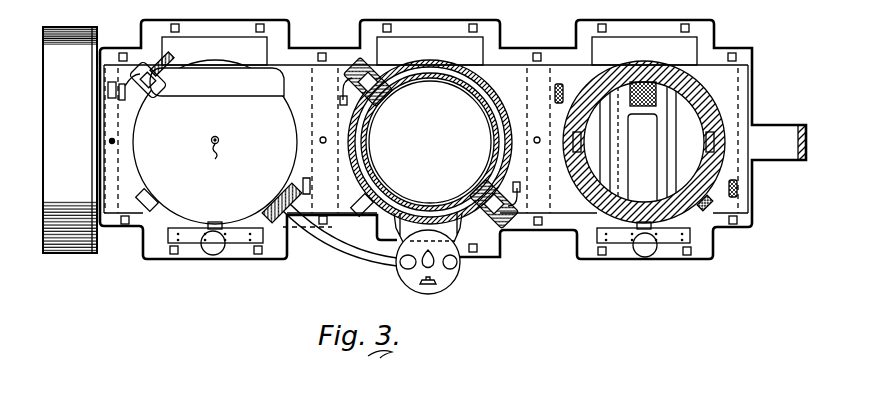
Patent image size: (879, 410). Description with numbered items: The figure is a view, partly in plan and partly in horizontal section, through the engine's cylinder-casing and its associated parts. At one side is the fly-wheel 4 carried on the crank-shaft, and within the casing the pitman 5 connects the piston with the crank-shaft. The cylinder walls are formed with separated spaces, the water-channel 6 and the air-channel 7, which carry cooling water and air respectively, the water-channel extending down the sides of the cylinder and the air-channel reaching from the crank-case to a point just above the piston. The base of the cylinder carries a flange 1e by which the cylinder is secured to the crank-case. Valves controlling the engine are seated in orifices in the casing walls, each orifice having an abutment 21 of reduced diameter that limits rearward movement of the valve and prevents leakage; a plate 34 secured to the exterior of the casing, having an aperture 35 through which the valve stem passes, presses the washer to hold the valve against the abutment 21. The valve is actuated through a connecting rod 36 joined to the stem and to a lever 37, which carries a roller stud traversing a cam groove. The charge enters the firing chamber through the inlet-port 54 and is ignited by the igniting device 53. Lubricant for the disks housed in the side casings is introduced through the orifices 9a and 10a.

The fly-wheel 4 is at (97, 32).
The plate 34 is at (154, 70).
The igniting device 53 is at (220, 137).
The orifice 9a is at (115, 141).
The orifice 10a is at (537, 136).
The lever 37 is at (381, 94).
The water-channel 6 is at (482, 100).
The air-channel 7 is at (372, 158).
The inlet-port 54 is at (487, 168).
The abutment 21 is at (478, 170).
The aperture 35 is at (458, 178).
The pitman 5 is at (644, 106).
The connecting rod 36 is at (661, 165).
The flange 1e is at (672, 252).